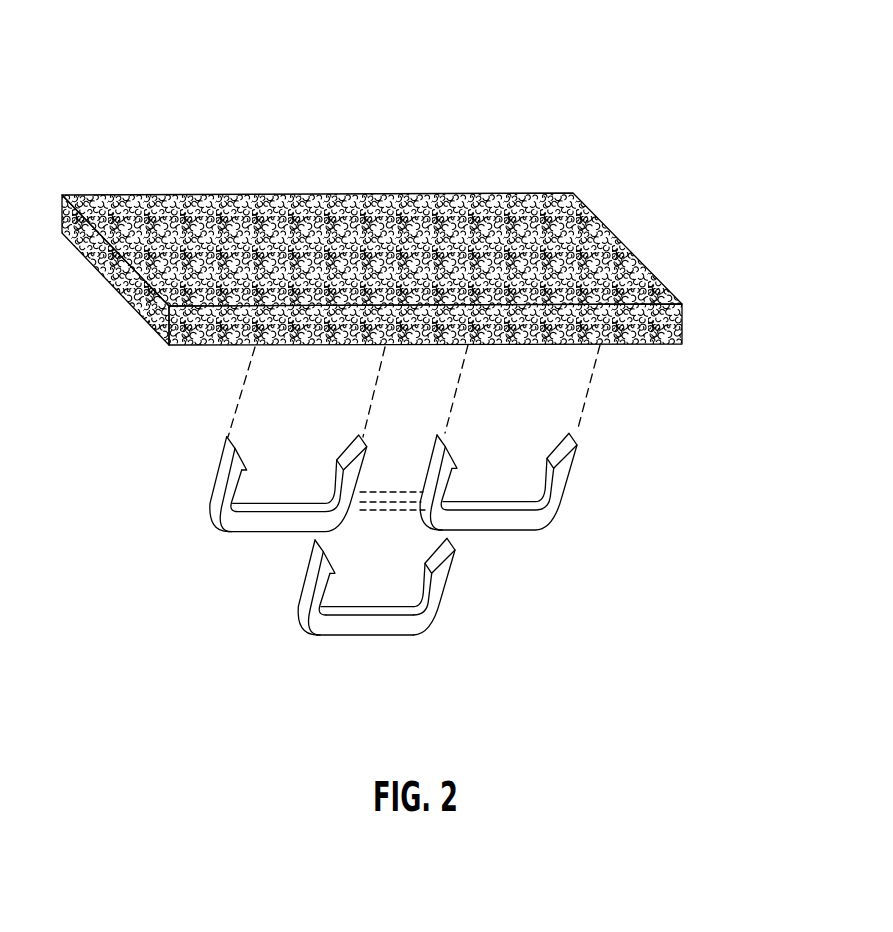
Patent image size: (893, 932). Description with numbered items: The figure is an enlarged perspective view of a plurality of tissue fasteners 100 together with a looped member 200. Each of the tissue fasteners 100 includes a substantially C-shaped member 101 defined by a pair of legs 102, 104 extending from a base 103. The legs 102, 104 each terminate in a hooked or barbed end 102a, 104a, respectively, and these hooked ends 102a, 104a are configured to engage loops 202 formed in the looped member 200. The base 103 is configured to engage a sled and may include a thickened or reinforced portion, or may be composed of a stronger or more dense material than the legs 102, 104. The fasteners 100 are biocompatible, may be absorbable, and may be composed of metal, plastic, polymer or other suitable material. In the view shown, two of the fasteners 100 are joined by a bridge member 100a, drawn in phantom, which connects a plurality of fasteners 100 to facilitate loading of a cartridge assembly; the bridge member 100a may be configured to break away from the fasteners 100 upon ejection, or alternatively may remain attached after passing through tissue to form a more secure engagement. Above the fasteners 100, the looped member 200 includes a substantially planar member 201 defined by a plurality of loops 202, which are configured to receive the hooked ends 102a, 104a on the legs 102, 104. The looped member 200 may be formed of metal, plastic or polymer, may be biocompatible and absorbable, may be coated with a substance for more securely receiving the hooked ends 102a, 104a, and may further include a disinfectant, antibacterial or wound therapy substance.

The looped member 200 is at (508, 72).
The planar member 201 is at (487, 170).
The loops 202 is at (682, 321).
The tissue fasteners 100 is at (580, 575).
The bridge member 100a is at (400, 492).
The C-shaped member 101 is at (415, 653).
The leg 102 is at (298, 605).
The hooked end 102a is at (310, 562).
The base 103 is at (335, 637).
The leg 104 is at (442, 615).
The hooked end 104a is at (457, 557).